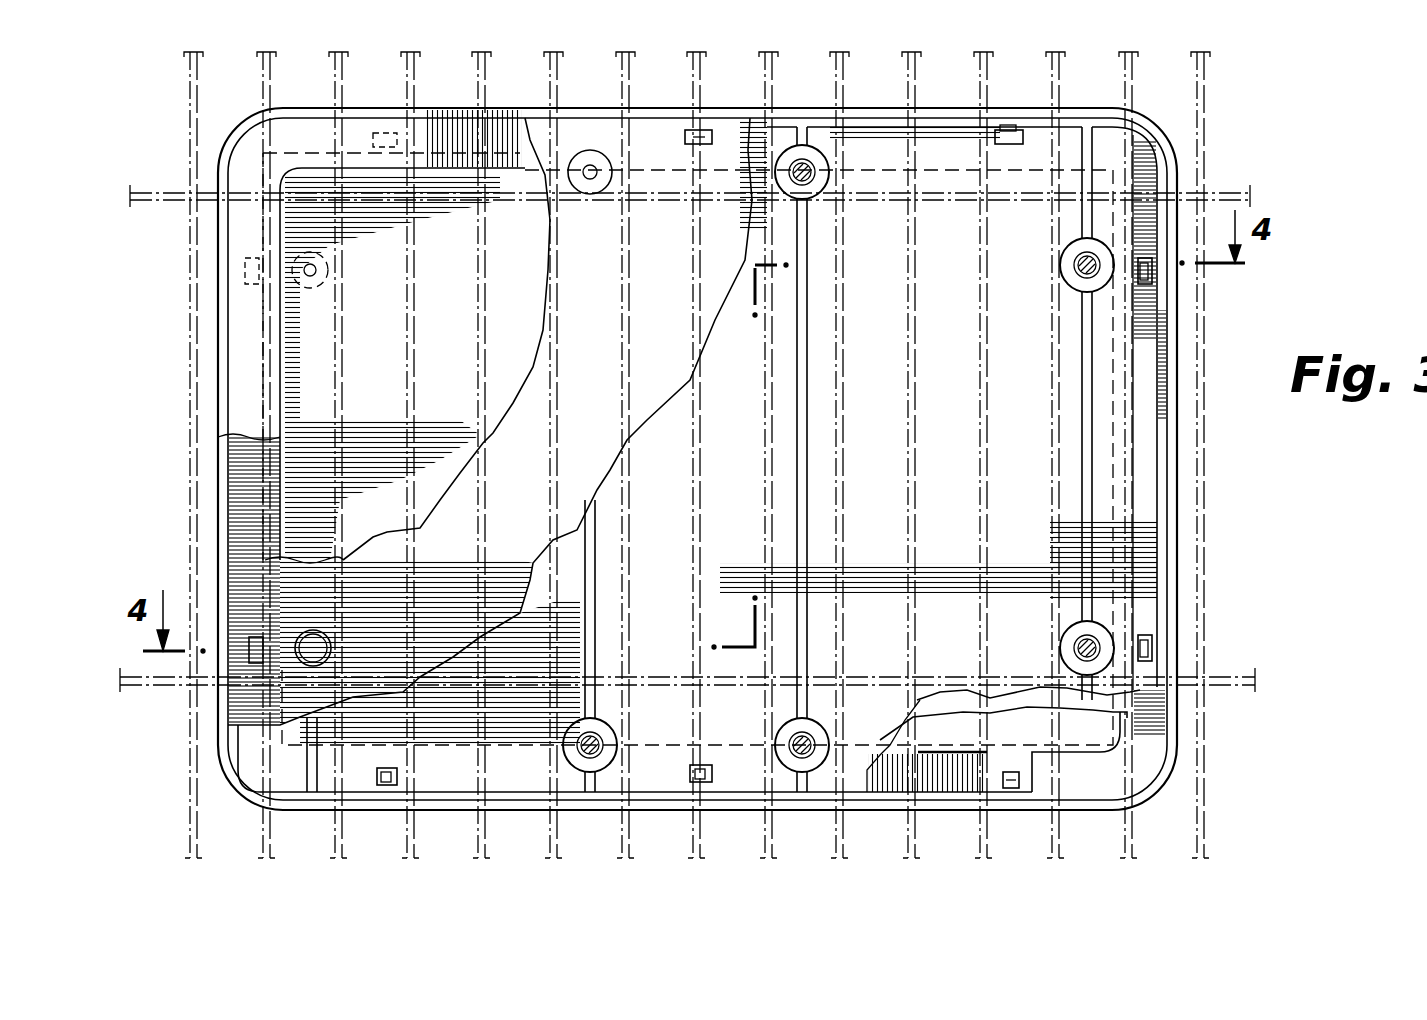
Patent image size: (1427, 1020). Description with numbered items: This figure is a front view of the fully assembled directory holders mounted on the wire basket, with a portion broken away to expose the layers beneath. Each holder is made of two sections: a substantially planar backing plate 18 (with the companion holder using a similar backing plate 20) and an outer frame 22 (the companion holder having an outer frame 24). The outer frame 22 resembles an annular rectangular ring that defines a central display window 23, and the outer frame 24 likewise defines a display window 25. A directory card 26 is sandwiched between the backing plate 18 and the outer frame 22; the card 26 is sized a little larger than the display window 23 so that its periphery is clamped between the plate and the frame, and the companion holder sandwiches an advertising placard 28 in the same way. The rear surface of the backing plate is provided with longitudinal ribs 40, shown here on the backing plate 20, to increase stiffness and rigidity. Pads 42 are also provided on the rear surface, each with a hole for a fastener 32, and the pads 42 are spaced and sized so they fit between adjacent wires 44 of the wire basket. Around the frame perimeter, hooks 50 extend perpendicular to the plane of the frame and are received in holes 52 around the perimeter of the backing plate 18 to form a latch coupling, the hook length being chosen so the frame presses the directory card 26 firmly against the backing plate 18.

The backing plate 18 is at (490, 421).
The backing plate 20 is at (926, 379).
The outer frame 22 is at (238, 416).
The display window 23 is at (285, 349).
The outer frame 24 is at (1160, 735).
The display window 25 is at (1078, 740).
The directory card 26 is at (395, 365).
The advertising placard 28 is at (937, 720).
The fastener 32 is at (1080, 260).
The ribs 40 is at (805, 322).
The pads 42 is at (600, 182).
The wires 44 is at (1112, 65).
The hooks 50 is at (388, 786).
The holes 52 is at (702, 132).